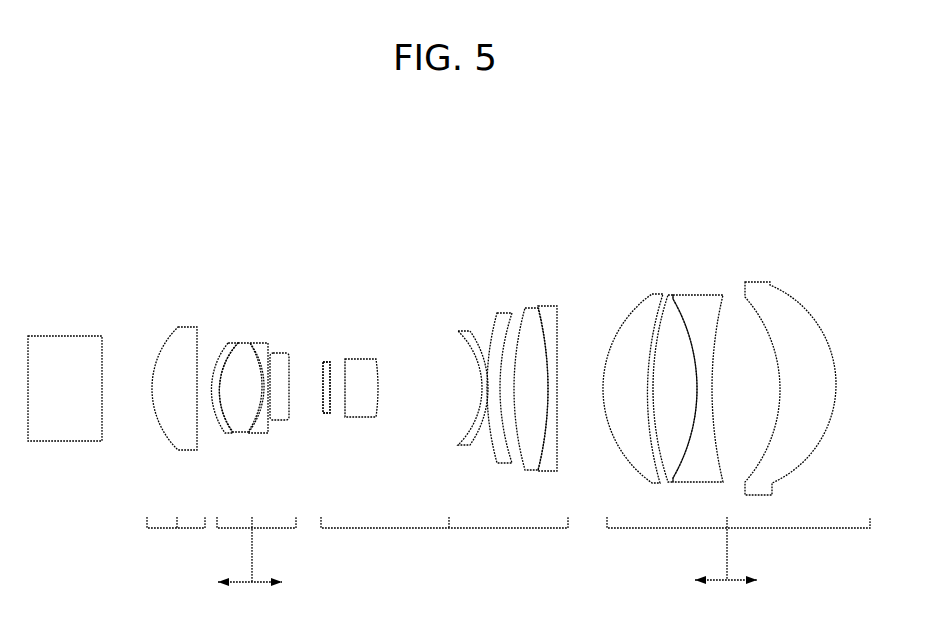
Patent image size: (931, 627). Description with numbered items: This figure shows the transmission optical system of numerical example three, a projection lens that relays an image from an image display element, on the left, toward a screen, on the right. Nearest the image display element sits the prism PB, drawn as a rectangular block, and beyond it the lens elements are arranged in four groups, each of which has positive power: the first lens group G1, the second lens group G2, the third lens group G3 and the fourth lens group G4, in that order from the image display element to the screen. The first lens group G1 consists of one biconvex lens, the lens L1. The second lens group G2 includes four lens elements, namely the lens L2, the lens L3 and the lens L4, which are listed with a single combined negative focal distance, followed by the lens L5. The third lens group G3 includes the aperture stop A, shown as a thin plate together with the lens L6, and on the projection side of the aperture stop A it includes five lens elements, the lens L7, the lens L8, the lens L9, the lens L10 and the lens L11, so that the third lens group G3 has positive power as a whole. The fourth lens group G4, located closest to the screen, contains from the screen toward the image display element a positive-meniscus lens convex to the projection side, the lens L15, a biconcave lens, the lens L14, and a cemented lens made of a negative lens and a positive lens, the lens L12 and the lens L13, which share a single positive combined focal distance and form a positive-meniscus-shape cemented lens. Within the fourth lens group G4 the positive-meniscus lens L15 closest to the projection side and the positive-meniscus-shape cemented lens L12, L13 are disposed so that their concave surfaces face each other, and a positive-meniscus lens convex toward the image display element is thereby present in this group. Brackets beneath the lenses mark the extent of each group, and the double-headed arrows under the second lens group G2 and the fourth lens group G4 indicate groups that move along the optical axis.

The prism PB is at (76, 336).
The lens L1 is at (178, 332).
The lens L2 is at (223, 348).
The lens L3 is at (245, 345).
The lens L4 is at (263, 345).
The lens L5 is at (280, 353).
The lens L6 is at (328, 362).
The aperture stop A is at (329, 362).
The lens L7 is at (358, 359).
The lens L8 is at (462, 330).
The lens L9 is at (503, 313).
The lens L10 is at (527, 308).
The lens L11 is at (545, 305).
The lens L12 is at (655, 293).
The lens L13 is at (667, 292).
The lens L14 is at (712, 293).
The lens L15 is at (798, 308).
The first lens group G1 is at (176, 507).
The second lens group G2 is at (256, 536).
The third lens group G3 is at (444, 507).
The fourth lens group G4 is at (738, 535).